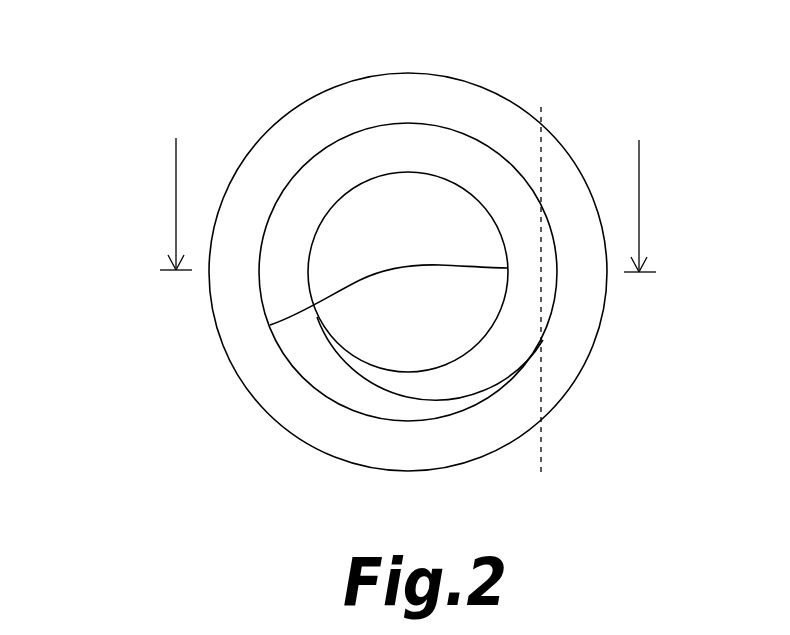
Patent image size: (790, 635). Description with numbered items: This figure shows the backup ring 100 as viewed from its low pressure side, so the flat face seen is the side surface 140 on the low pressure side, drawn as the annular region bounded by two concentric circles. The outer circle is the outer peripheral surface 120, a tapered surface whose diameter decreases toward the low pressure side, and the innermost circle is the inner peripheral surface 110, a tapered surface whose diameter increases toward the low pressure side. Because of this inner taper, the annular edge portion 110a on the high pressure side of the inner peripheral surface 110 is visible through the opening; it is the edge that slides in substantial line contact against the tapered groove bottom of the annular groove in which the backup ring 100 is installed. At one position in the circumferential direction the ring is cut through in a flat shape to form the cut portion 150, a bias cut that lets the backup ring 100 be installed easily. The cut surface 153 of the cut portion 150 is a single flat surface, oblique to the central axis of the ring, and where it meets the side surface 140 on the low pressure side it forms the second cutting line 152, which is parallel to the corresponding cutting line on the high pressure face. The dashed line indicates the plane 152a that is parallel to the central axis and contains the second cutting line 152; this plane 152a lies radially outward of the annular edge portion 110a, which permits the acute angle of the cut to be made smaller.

The backup ring 100 is at (242, 103).
The inner peripheral surface 110 is at (433, 152).
The annular edge portion 110a is at (270, 325).
The outer peripheral surface 120 is at (340, 83).
The side surface on the low pressure side 140 is at (267, 365).
The cut portion 150 is at (448, 407).
The second cutting line 152 is at (542, 383).
The plane 152a is at (542, 445).
The cut surface 153 is at (407, 395).